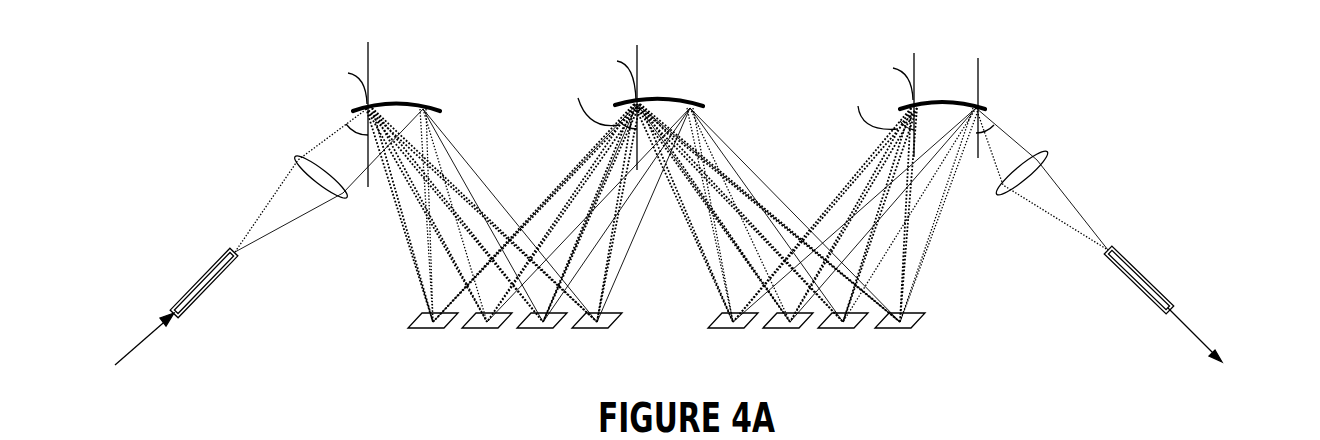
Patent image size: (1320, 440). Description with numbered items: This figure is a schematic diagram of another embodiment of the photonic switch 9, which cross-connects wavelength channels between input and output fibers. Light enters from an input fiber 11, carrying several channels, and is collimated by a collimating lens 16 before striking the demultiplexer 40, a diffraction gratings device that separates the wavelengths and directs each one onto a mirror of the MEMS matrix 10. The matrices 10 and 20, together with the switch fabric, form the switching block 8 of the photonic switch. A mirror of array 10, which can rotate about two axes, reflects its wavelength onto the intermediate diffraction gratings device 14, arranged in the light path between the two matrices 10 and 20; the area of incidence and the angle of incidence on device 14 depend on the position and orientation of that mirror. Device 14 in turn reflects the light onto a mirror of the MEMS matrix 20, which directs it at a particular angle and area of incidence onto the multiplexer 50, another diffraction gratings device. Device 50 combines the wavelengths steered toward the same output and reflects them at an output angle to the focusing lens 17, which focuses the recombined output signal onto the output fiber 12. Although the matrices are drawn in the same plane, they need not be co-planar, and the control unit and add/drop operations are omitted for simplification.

The switching block 8 is at (410, 328).
The photonic switch 9 is at (314, 352).
The 3D-MEMS matrix 10 is at (489, 374).
The input fiber 11 is at (188, 290).
The output fiber 12 is at (1157, 285).
The intermediate diffraction gratings device 14 is at (668, 97).
The collimating lens 16 is at (302, 157).
The focusing lens 17 is at (1045, 152).
The 3D-MEMS matrix 20 is at (808, 344).
The demultiplexer 40 is at (405, 102).
The multiplexer 50 is at (927, 100).